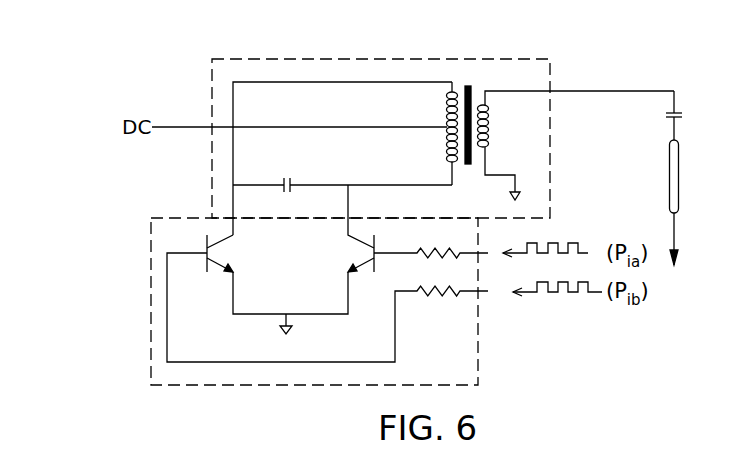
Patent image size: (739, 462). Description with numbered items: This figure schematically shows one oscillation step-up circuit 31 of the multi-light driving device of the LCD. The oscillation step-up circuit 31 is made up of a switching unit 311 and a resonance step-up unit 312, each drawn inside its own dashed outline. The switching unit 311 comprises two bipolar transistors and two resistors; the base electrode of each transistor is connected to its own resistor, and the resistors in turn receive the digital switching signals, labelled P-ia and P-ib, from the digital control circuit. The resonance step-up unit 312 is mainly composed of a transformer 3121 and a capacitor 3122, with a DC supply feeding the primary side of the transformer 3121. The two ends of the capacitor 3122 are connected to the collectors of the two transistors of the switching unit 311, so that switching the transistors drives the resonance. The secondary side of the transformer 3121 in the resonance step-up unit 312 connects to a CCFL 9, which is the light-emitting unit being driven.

The oscillation step-up circuit 31 is at (83, 192).
The resonance step-up unit 312 is at (210, 184).
The switching unit 311 is at (152, 247).
The transformer 3121 is at (468, 85).
The capacitor 3122 is at (286, 178).
The CCFL 9 is at (673, 184).